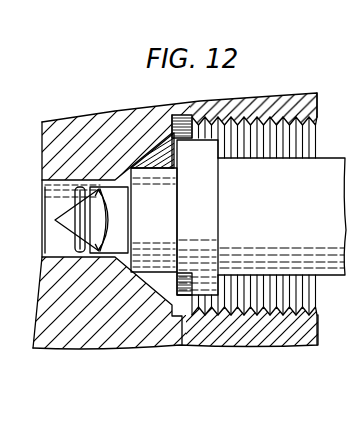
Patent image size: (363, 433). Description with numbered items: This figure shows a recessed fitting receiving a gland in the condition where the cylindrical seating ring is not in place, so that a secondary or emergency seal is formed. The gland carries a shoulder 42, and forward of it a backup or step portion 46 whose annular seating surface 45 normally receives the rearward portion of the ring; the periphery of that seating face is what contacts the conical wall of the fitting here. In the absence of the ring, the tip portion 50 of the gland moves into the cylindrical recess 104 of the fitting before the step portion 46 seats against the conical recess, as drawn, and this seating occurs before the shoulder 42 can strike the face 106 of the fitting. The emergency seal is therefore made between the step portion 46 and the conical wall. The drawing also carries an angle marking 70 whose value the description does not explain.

The shoulder 42 is at (191, 314).
The annular seating surface 45 is at (128, 170).
The step portion 46 is at (157, 172).
The tip portion 50 is at (82, 183).
The field angle (70 degrees) 70 is at (108, 219).
The cylindrical recess 104 is at (62, 252).
The face 106 is at (183, 113).